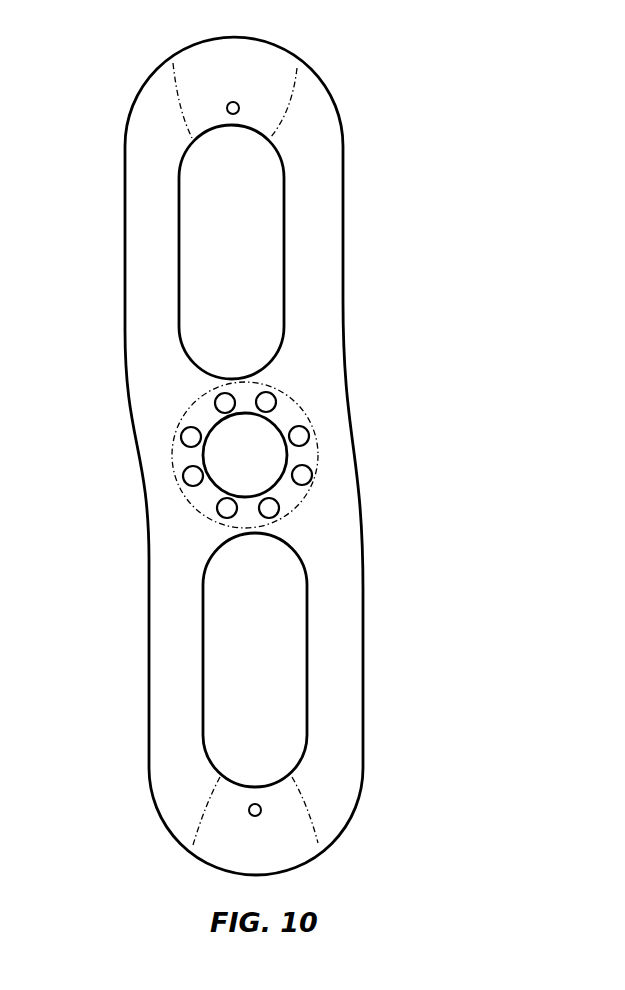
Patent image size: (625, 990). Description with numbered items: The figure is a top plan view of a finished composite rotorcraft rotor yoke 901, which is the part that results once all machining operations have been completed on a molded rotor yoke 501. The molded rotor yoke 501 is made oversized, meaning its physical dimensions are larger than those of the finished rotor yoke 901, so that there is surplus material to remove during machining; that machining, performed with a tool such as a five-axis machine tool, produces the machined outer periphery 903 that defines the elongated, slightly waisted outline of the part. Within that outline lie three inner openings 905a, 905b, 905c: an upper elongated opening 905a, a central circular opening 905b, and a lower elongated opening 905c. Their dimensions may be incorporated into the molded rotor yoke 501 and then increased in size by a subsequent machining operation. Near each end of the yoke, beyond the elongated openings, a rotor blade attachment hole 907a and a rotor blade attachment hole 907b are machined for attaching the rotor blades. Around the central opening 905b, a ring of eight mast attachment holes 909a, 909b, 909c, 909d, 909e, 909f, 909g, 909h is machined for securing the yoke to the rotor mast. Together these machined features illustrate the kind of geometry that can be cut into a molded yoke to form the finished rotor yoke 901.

The rotor yoke 901 is at (308, 456).
The outer periphery 903 is at (342, 295).
The molded rotor yoke 501 is at (297, 456).
The inner opening 905a is at (182, 253).
The inner opening 905b is at (273, 421).
The inner opening 905c is at (203, 706).
The rotor blade attachment hole 907a is at (239, 106).
The rotor blade attachment hole 907b is at (248, 810).
The mast attachment hole 909a is at (222, 400).
The mast attachment hole 909b is at (266, 402).
The mast attachment hole 909c is at (300, 437).
The mast attachment hole 909d is at (302, 476).
The mast attachment hole 909e is at (269, 508).
The mast attachment hole 909f is at (227, 508).
The mast attachment hole 909g is at (193, 476).
The mast attachment hole 909h is at (191, 437).